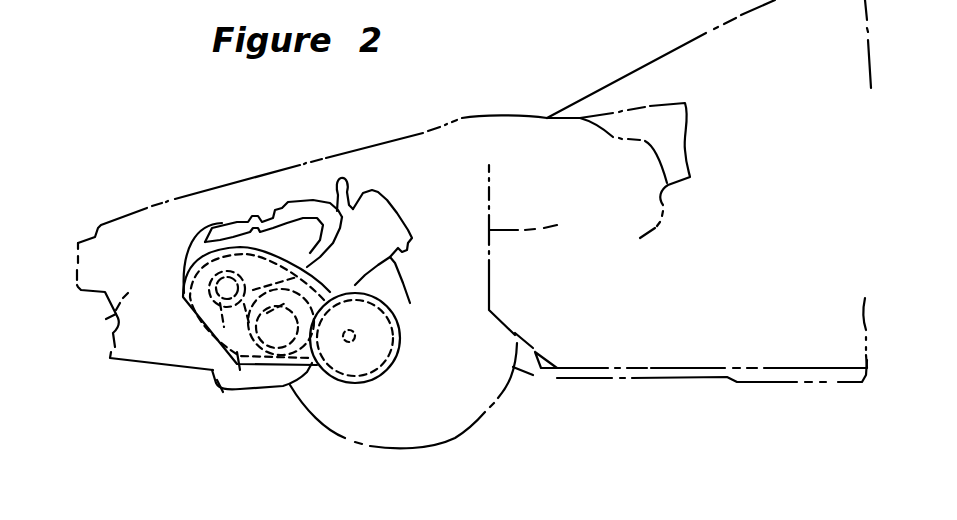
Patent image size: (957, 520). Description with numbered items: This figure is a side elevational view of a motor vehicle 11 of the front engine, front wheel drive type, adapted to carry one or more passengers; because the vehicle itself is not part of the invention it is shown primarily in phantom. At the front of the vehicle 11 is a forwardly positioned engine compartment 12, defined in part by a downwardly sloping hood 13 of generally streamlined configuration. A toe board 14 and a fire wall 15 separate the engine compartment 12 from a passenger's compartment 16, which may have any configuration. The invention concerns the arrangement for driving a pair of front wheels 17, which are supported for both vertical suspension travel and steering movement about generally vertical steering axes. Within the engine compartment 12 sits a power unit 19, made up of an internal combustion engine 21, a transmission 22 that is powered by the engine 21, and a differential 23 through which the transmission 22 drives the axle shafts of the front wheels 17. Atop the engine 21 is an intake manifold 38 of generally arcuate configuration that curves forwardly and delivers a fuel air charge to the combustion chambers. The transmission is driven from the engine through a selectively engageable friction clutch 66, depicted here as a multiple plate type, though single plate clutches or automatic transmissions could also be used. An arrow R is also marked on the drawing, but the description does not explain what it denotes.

The motor vehicle 11 is at (102, 320).
The engine compartment 12 is at (127, 273).
The hood 13 is at (383, 138).
The toe board 14 is at (521, 345).
The fire wall 15 is at (557, 225).
The passenger's compartment 16 is at (770, 190).
The front wheels 17 is at (543, 383).
The power unit 19 is at (183, 323).
The internal combustion engine 21 is at (370, 208).
The transmission 22 is at (208, 325).
The differential 23 is at (380, 347).
The intake manifold 38 is at (235, 219).
The friction clutch 66 is at (182, 293).
The direction of rotation R is at (416, 267).